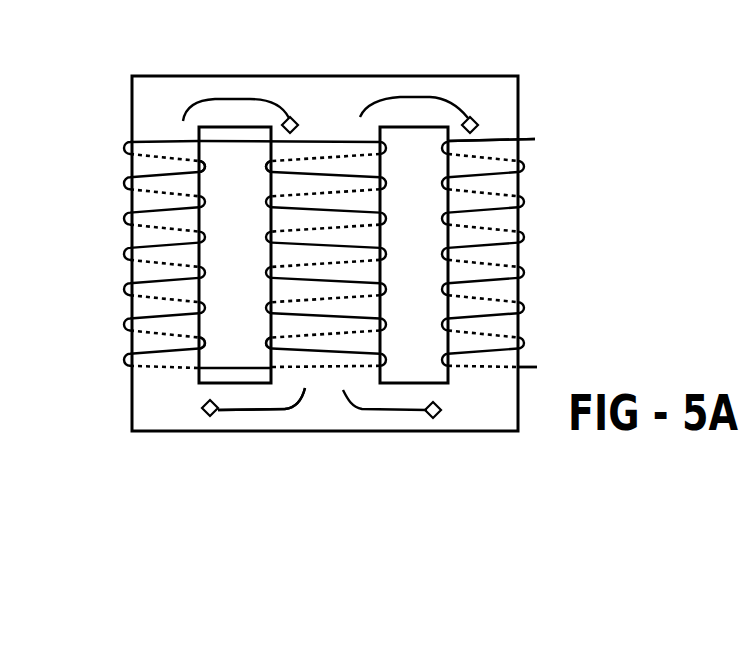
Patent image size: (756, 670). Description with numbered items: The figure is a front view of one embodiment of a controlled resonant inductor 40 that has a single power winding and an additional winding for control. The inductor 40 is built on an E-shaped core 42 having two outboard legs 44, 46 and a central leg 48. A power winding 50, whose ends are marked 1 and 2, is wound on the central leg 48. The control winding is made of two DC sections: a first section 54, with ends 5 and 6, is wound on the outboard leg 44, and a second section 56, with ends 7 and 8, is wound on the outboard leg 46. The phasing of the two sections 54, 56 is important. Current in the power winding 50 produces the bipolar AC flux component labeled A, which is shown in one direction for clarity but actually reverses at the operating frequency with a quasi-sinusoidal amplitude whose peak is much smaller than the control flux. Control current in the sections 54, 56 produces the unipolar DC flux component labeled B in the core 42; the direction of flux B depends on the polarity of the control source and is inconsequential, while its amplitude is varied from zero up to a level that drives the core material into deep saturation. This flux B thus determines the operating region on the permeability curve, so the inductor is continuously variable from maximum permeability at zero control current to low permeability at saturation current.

The resonant inductor 40 is at (427, 66).
The E-shaped core 42 is at (178, 408).
The outboard leg 44 is at (157, 374).
The outboard leg 46 is at (473, 387).
The central leg 48 is at (307, 377).
The power winding 50 is at (327, 140).
The first section of control winding 54 is at (123, 289).
The second section of control winding 56 is at (527, 200).
The end of second control winding section 8 is at (500, 129).
The end of second control winding section 7 is at (534, 358).
The end of first control winding section 6 is at (212, 155).
The end of power winding 1 is at (255, 155).
The end of first control winding section 5 is at (210, 350).
The end of power winding 2 is at (255, 350).
The bipolar AC flux component A is at (263, 411).
The DC flux component B is at (185, 105).